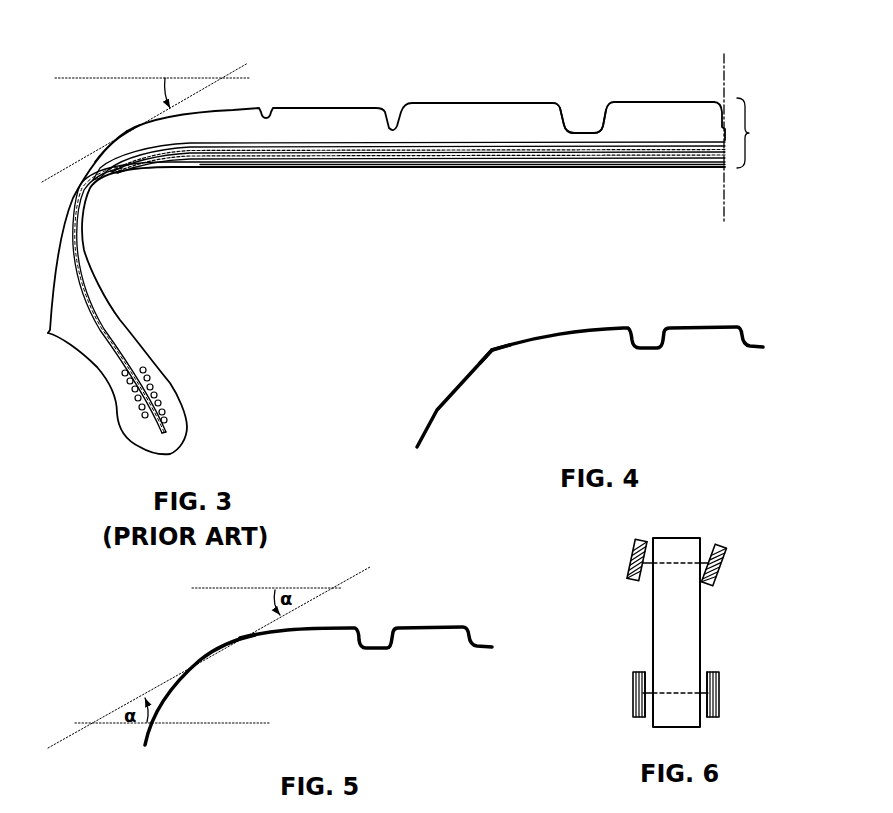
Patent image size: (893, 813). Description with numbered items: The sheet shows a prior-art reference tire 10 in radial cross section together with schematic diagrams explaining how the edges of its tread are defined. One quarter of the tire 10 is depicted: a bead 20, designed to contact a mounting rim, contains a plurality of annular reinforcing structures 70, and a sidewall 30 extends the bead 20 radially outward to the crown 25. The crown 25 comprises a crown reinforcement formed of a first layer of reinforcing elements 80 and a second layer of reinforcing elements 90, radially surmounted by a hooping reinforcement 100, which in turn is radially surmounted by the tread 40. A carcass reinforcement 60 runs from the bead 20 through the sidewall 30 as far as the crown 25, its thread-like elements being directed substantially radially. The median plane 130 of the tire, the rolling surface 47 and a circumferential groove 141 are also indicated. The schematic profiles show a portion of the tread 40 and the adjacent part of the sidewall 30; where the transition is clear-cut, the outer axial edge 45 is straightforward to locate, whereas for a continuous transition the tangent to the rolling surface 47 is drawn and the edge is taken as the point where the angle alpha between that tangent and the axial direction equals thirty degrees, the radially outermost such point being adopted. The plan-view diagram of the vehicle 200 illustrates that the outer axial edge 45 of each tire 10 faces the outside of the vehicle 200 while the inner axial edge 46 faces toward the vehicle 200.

In FIG. 3, the tire 10 is at (77, 62).
In FIG. 3, the bead 20 is at (125, 423).
In FIG. 3, the crown 25 is at (766, 133).
In FIG. 3, the sidewall 30 is at (62, 267).
In FIG. 4, the sidewall 30 is at (440, 407).
In FIG. 3, the tread 40 is at (552, 131).
In FIG. 4, the tread 40 is at (607, 363).
In FIG. 5, the tread 40 is at (336, 665).
In FIG. 3, the outer axial edge 45 is at (127, 130).
In FIG. 4, the outer axial edge 45 is at (489, 346).
In FIG. 5, the outer axial edge 45 is at (206, 654).
In FIG. 6, the outer axial edge 45 is at (620, 583).
In FIG. 6, the inner axial edge 46 is at (643, 583).
In FIG. 3, the rolling surface 47 is at (683, 101).
In FIG. 3, the carcass reinforcement 60 is at (78, 223).
In FIG. 3, the annular reinforcing structure 70 is at (153, 387).
In FIG. 3, the first layer of reinforcing elements 80 is at (315, 150).
In FIG. 3, the second layer of reinforcing elements 90 is at (352, 150).
In FIG. 3, the hooping reinforcement 100 is at (428, 150).
In FIG. 3, the median plane 130 is at (724, 214).
In FIG. 3, the circumferential groove 141 is at (585, 116).
In FIG. 6, the vehicle 200 is at (675, 632).